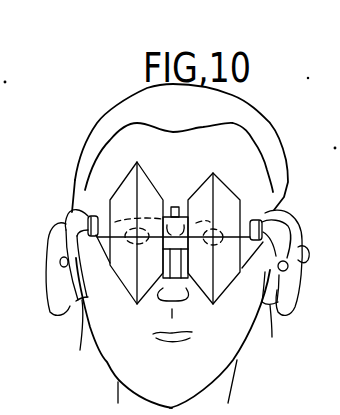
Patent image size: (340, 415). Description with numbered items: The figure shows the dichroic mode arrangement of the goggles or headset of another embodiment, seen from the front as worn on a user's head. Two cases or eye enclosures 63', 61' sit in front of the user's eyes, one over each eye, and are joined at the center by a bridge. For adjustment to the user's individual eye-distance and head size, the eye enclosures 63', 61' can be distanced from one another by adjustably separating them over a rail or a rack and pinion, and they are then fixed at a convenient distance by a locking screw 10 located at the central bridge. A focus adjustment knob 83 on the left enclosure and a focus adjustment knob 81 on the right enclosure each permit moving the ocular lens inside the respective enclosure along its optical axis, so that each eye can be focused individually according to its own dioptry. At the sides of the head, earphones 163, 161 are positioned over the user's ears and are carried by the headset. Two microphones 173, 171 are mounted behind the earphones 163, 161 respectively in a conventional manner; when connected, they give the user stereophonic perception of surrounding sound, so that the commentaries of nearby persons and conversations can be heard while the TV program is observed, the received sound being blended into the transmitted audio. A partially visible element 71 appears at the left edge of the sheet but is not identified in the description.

The nose bridge adjustment mechanism 10 is at (173, 206).
The left lens 63' is at (132, 248).
The right lens 61' is at (214, 266).
The left side pad 83 is at (80, 206).
The right side pad 81 is at (264, 214).
The left ear loop 173 is at (50, 238).
The right ear loop 171 is at (302, 276).
The left strap 163 is at (64, 306).
The right strap 161 is at (282, 290).
The ear piece (partially shown) 71 is at (6, 310).